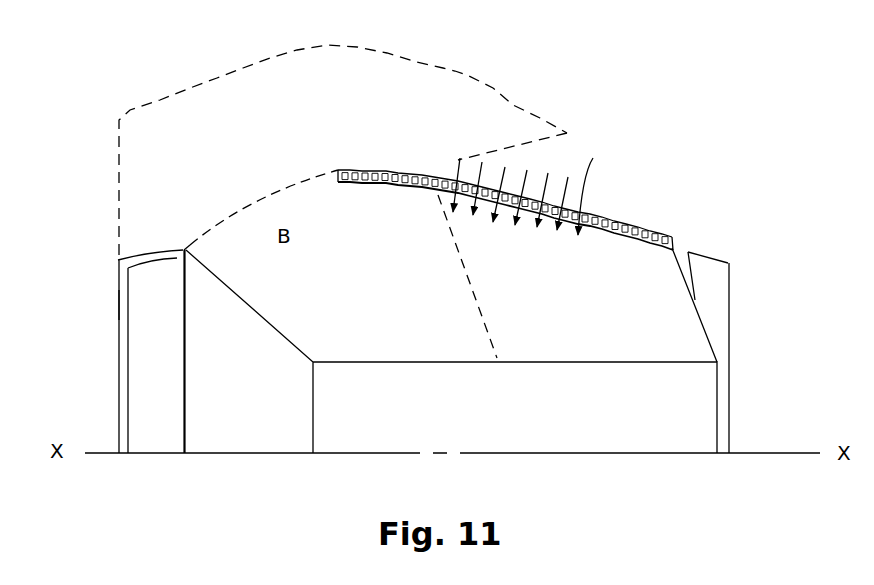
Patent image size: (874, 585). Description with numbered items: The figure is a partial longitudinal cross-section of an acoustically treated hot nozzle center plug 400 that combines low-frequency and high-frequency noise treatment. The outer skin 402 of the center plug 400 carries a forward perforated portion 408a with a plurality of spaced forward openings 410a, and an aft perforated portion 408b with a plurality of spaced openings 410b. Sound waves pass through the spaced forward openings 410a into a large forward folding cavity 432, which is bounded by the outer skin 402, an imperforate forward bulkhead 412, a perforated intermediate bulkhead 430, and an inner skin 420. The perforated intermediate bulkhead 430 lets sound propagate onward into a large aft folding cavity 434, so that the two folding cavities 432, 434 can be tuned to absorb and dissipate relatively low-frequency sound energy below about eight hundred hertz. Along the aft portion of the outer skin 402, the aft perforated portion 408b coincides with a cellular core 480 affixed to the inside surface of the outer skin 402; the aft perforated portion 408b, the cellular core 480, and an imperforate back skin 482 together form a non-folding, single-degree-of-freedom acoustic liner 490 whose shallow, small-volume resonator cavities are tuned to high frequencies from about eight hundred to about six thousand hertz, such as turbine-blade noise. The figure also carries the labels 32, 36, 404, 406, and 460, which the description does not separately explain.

The outer structure outline (phantom) 32 is at (455, 71).
The interior region 36 is at (340, 96).
The center plug 400 is at (700, 186).
The outer skin 402 is at (147, 252).
The first end panel 404 is at (118, 303).
The second side wall 406 is at (731, 292).
The forward perforated portion 408a is at (207, 237).
The aft perforated portion 408b is at (608, 210).
The spaced forward openings 410a is at (243, 215).
The spaced openings 410b is at (598, 210).
The imperforate forward bulkhead 412 is at (280, 335).
The inner skin 420 is at (595, 362).
The perforated intermediate bulkhead 430 is at (497, 354).
The forward folding cavity 432 is at (382, 229).
The aft folding cavity 434 is at (622, 279).
The wedge portion 460 is at (710, 340).
The cellular core 480 is at (657, 228).
The imperforate back skin 482 is at (550, 220).
The acoustic liner 490 is at (713, 257).